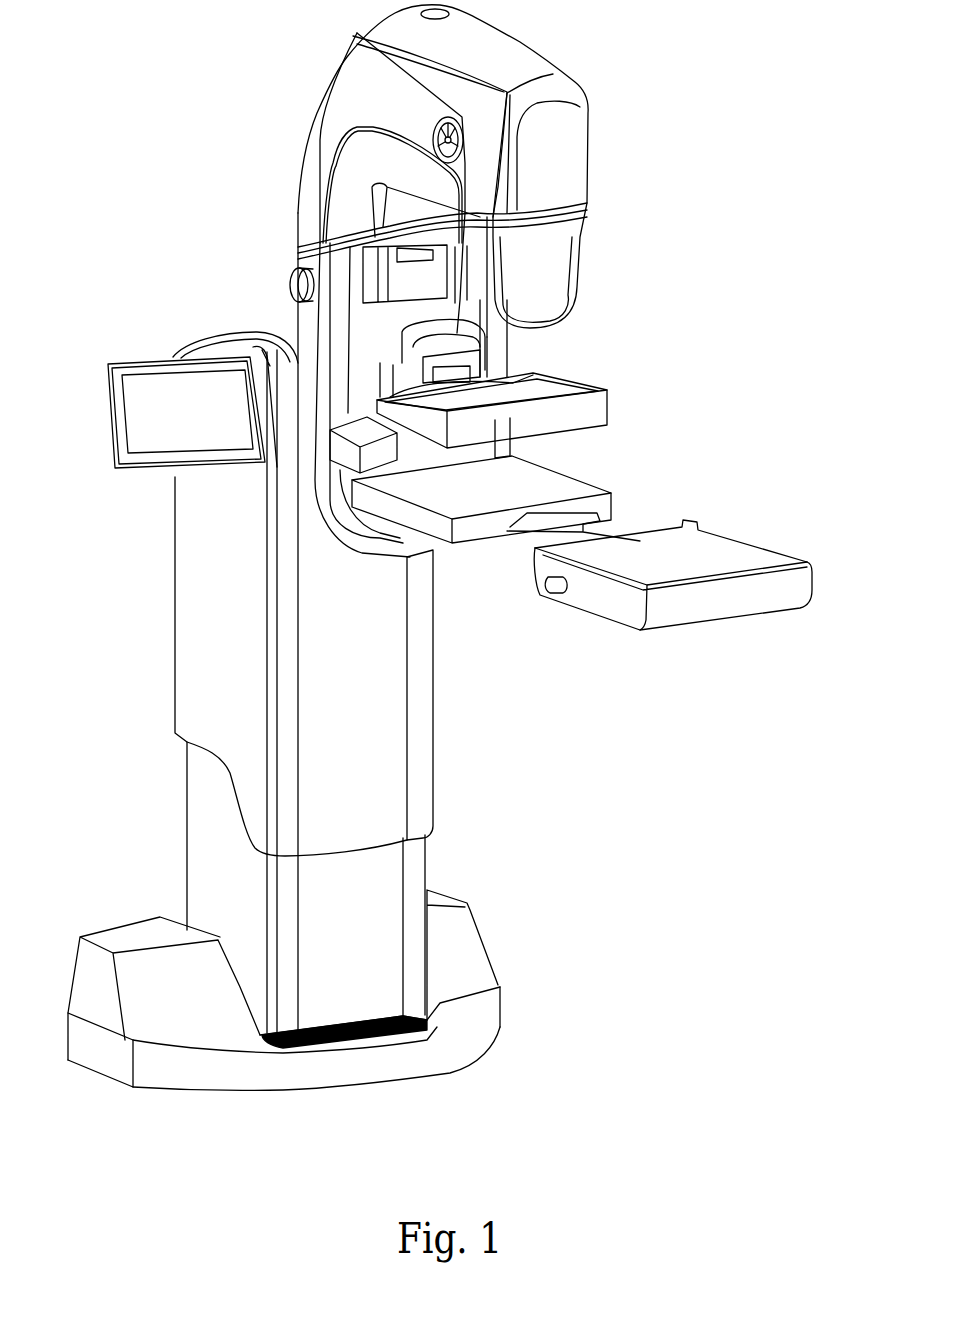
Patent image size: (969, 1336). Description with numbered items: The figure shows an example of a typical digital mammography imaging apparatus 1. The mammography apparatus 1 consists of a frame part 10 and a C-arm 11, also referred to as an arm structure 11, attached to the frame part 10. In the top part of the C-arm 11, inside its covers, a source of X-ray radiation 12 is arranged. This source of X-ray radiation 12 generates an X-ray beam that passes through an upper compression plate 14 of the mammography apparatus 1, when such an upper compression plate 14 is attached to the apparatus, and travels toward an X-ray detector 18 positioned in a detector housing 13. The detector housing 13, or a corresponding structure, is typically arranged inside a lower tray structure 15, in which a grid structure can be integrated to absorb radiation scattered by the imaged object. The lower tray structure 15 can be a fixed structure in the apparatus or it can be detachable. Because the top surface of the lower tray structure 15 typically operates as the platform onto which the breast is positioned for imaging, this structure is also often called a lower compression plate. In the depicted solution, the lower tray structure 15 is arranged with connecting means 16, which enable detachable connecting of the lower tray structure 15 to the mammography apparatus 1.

The mammography apparatus 1 is at (58, 651).
The frame part 10 is at (388, 722).
The C-arm 11 is at (350, 92).
The source of X-ray radiation 12 is at (570, 148).
The detector housing 13 is at (553, 488).
The upper compression plate 14 is at (603, 392).
The lower tray structure 15 is at (787, 588).
The connecting means 16 is at (557, 582).
The X-ray detector 18 is at (515, 492).